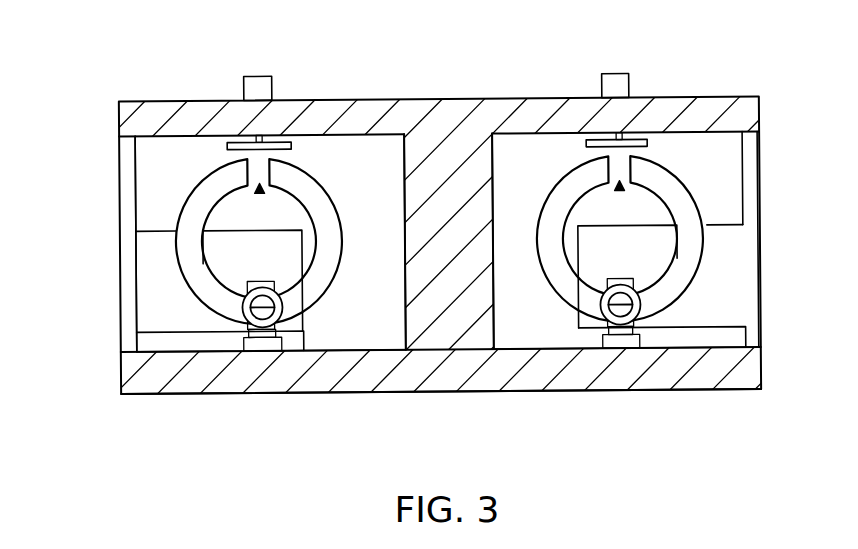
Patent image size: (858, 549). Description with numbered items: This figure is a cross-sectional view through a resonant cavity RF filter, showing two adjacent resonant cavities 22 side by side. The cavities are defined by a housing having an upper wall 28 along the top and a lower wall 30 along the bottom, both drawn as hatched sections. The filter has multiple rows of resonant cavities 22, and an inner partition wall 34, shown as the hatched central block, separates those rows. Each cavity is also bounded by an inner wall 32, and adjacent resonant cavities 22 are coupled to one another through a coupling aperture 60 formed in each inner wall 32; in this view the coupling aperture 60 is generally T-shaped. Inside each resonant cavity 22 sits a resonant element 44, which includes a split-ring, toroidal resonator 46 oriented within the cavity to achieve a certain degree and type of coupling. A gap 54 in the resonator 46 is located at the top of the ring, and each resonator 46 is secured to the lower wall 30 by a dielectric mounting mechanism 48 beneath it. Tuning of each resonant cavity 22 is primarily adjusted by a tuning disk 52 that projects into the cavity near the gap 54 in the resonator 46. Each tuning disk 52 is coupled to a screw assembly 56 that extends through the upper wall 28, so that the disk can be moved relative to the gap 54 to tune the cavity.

The resonant cavity 22 is at (346, 333).
The upper wall 28 is at (140, 100).
The lower wall 30 is at (491, 393).
The inner wall 32 is at (357, 172).
The inner partition wall 34 is at (450, 362).
The resonant element 44 is at (186, 262).
The split-ring, toroidal resonator 46 is at (182, 194).
The dielectric mounting mechanism 48 is at (243, 308).
The tuning disk 52 is at (597, 140).
The gap 54 is at (260, 186).
The screw assembly 56 is at (249, 76).
The coupling aperture 60 is at (158, 250).